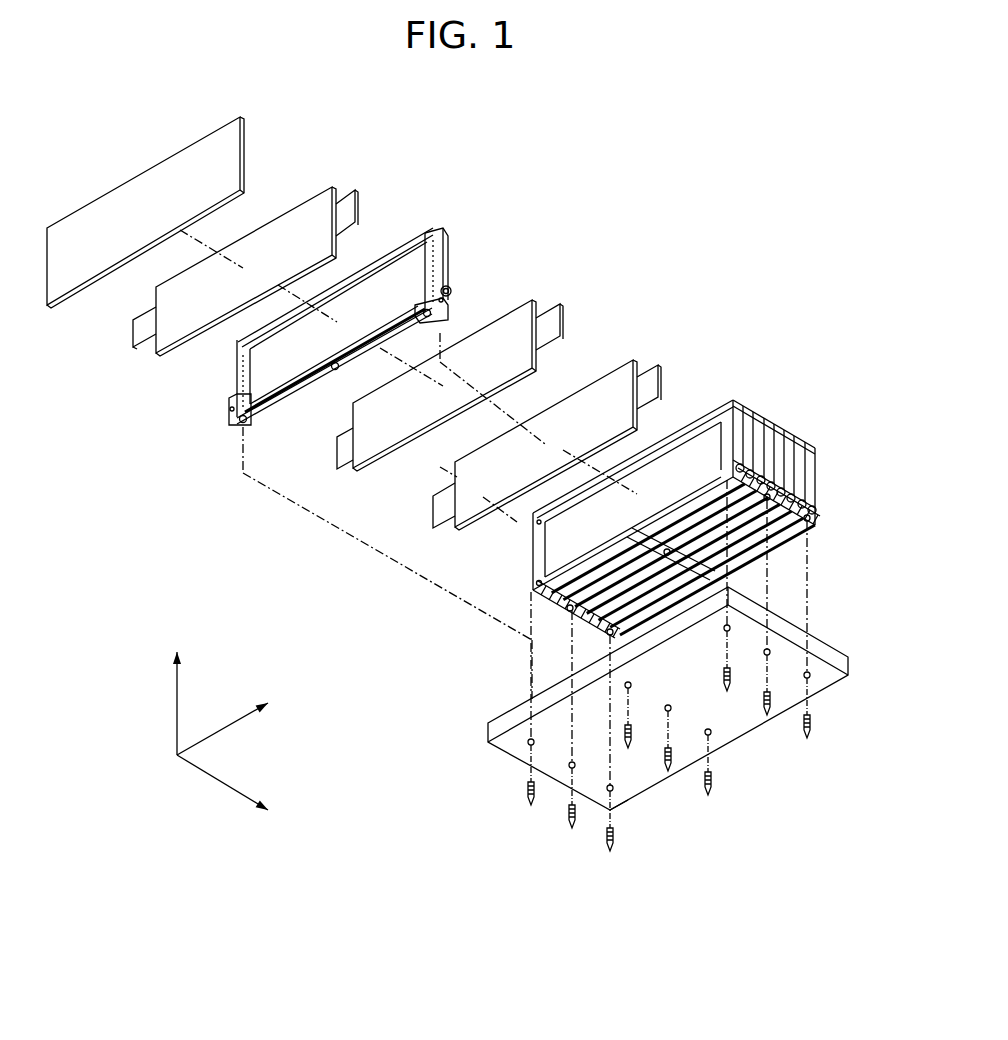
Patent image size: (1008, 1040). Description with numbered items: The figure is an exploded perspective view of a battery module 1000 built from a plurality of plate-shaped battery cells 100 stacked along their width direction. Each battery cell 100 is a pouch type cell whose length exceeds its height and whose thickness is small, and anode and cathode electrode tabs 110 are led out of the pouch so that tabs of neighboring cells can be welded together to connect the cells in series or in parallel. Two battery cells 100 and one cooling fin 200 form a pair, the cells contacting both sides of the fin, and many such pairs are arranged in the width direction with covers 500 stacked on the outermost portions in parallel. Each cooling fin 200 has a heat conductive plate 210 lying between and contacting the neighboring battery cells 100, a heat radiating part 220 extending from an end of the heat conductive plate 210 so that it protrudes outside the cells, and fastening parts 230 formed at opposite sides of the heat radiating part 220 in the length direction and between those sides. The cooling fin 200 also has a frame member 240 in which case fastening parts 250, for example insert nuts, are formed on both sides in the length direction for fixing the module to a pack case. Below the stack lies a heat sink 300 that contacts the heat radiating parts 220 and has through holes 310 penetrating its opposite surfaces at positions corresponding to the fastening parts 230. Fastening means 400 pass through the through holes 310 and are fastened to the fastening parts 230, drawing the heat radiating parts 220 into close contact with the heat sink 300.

The battery module 1000 is at (565, 152).
The battery cell 100 is at (300, 212).
The electrode tab 110 is at (345, 198).
The cooling fin 200 is at (420, 232).
The heat conductive plate 210 is at (260, 377).
The heat radiating part 220 is at (437, 330).
The fastening part 230 is at (442, 317).
The frame member 240 is at (231, 412).
The case fastening part 250 is at (446, 285).
The heat sink 300 is at (488, 731).
The through hole 310 is at (620, 792).
The fastening means 400 is at (610, 852).
The cover 500 is at (193, 148).